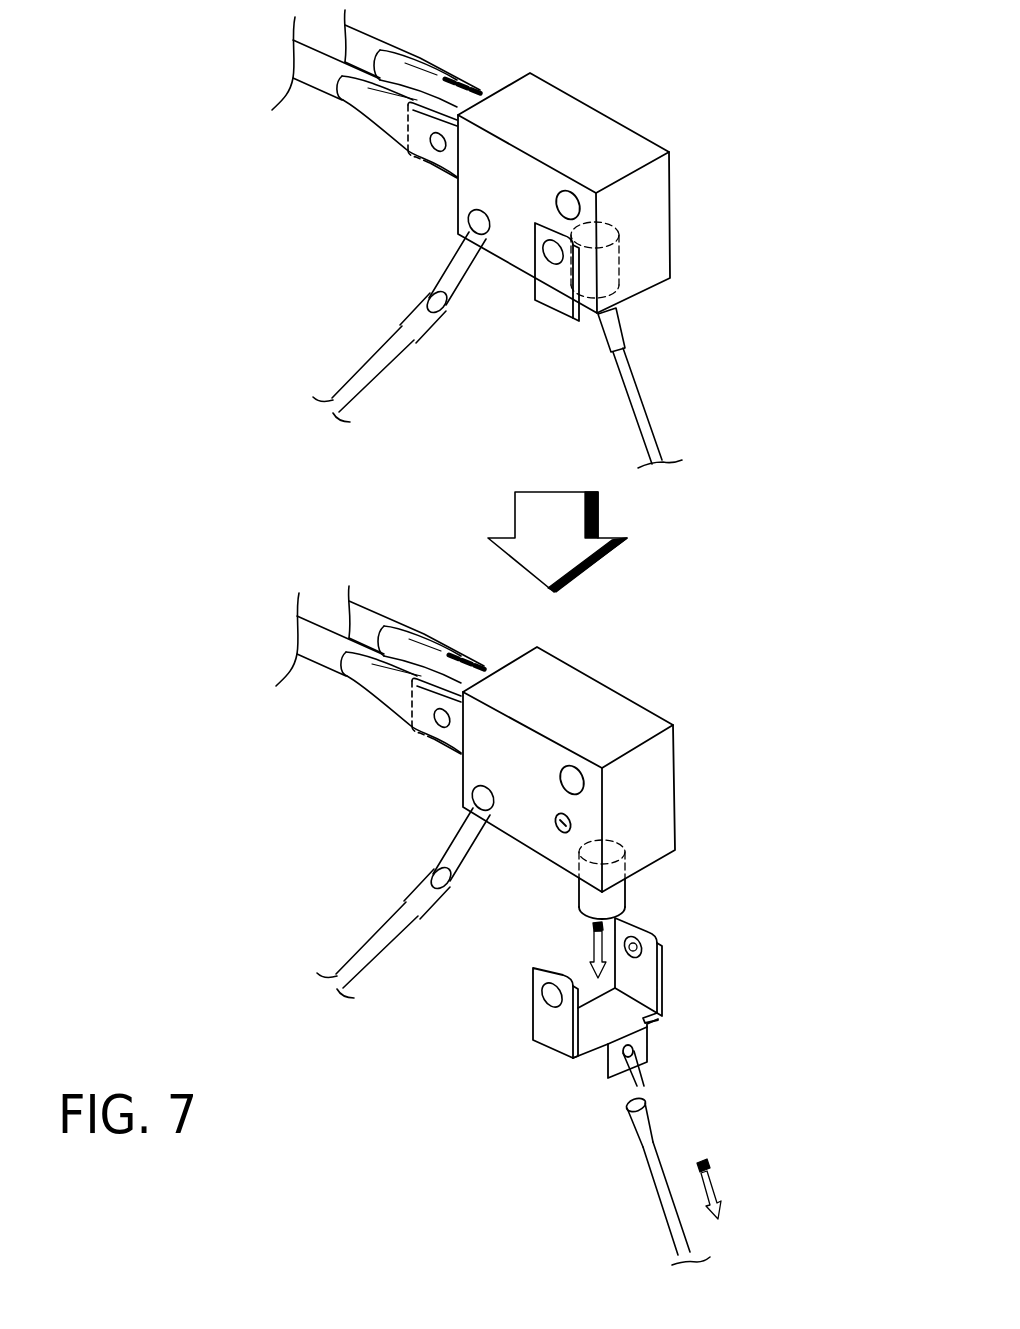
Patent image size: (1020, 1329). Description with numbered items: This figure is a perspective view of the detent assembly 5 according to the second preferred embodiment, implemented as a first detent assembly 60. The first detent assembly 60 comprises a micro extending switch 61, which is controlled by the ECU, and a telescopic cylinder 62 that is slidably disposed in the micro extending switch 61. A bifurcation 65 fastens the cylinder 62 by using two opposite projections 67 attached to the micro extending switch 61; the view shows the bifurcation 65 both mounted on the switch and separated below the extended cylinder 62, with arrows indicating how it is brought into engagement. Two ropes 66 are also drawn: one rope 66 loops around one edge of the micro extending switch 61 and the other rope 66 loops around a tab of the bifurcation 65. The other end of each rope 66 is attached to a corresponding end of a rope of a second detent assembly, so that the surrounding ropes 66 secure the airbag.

The detent assembly 5 is at (640, 107).
The first detent assembly 60 is at (513, 313).
The micro extending switch 61 is at (536, 94).
The telescopic cylinder 62 is at (618, 258).
The bifurcation 65 is at (548, 303).
The rope 66 is at (392, 335).
The projection 67 is at (553, 250).